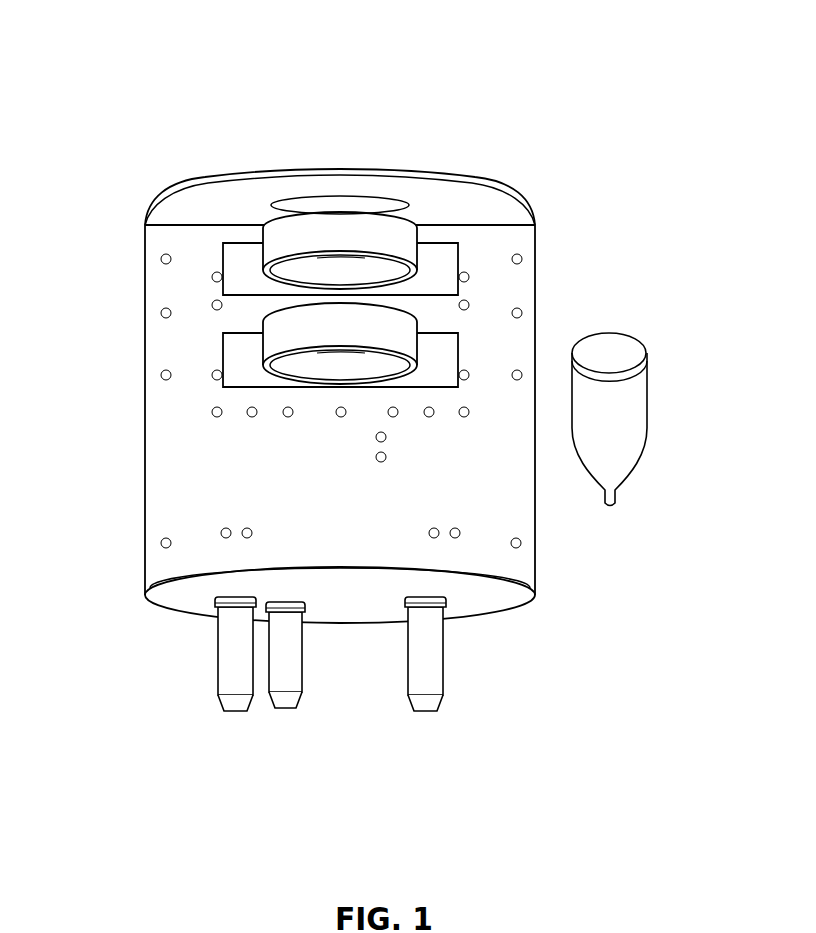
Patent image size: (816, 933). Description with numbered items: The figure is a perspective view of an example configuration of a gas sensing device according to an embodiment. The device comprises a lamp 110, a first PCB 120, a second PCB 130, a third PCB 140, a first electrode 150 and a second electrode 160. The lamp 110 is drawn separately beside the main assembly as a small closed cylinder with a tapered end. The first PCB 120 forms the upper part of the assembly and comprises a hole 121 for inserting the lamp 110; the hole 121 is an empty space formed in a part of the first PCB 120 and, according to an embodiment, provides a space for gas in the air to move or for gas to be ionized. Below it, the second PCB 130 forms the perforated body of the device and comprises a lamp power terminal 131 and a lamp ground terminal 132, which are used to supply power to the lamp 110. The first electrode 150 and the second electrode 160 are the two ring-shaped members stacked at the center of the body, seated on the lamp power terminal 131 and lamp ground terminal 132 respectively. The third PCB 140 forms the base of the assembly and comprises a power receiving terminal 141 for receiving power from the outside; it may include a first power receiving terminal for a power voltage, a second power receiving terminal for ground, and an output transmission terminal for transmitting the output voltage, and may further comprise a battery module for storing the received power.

The lamp 110 is at (647, 382).
The first PCB 120 is at (243, 202).
The hole 121 is at (347, 203).
The second PCB 130 is at (218, 440).
The lamp power terminal 131 is at (240, 258).
The lamp ground terminal 132 is at (245, 355).
The third PCB 140 is at (192, 600).
The power receiving terminal 141 is at (237, 673).
The first electrode 150 is at (382, 238).
The second electrode 160 is at (382, 332).